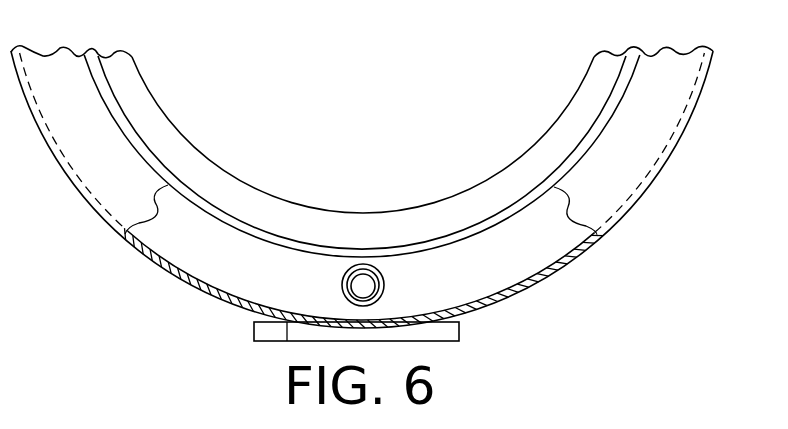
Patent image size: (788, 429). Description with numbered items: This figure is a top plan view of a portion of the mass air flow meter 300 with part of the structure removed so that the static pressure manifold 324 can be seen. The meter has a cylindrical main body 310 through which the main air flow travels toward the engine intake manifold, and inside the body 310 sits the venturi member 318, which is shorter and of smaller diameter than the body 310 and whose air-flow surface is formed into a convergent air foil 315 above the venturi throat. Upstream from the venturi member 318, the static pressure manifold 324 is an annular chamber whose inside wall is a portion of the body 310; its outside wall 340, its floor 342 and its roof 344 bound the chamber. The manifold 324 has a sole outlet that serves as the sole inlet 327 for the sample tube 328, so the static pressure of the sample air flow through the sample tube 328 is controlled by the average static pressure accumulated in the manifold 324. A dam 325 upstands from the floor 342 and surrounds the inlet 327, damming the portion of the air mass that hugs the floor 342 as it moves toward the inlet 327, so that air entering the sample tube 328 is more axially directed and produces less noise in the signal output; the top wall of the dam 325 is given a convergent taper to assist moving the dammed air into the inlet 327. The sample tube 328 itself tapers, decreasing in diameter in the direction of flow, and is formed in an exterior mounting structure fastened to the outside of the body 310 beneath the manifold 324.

The mass air flow meter 300 is at (316, 72).
The main body 310 is at (604, 123).
The convergent air foil 315 is at (223, 190).
The venturi member 318 is at (573, 92).
The static pressure manifold 324 is at (670, 172).
The dam 325 is at (384, 282).
The inlet 327 is at (372, 293).
The sample tube 328 is at (362, 281).
The outside wall 340 is at (562, 271).
The floor 342 is at (178, 248).
The roof 344 is at (110, 172).